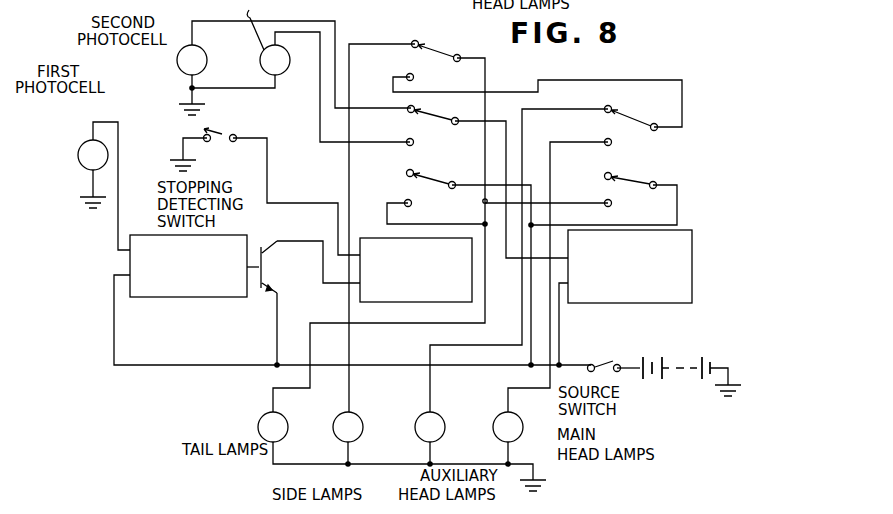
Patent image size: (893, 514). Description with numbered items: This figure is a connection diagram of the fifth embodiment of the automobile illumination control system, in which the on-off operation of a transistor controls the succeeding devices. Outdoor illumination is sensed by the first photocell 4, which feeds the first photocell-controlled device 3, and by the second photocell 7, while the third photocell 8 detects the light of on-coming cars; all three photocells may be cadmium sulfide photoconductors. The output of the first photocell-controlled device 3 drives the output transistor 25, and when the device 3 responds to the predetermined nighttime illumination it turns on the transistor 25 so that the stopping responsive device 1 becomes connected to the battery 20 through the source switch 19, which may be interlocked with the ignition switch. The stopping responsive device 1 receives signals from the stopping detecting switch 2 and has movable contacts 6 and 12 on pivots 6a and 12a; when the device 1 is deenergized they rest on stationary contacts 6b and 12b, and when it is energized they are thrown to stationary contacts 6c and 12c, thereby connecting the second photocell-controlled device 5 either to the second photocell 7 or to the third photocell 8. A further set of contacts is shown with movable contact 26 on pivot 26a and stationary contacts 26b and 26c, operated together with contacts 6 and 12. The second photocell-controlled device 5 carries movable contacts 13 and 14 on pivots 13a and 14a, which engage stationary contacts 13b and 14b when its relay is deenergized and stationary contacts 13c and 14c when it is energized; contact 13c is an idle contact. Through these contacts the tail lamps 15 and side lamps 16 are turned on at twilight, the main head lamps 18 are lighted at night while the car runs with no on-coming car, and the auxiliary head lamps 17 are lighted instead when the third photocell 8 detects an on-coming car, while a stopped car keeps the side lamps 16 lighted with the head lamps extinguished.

The stopping responsive device 1 is at (370, 302).
The stopping detecting switch 2 is at (221, 134).
The first photocell-controlled device 3 is at (143, 298).
The first photocell 4 is at (91, 140).
The second photocell-controlled device 5 is at (643, 303).
The movable contact 6 is at (434, 116).
The pivot of movable contact 6a is at (456, 125).
The stationary contact 6b is at (408, 112).
The stationary contact 6c is at (410, 146).
The second photocell 7 is at (187, 46).
The third photocell 8 is at (280, 78).
The movable contact 12 is at (436, 52).
The pivot of movable contact 12a is at (458, 54).
The stationary contact 12b is at (414, 40).
The stationary contact 12c is at (410, 73).
The movable contact 13 is at (632, 181).
The pivot of movable contact 13a is at (656, 181).
The stationary contact 13b is at (605, 173).
The stationary contact 13c is at (605, 200).
The movable contact 14 is at (630, 119).
The pivot of movable contact 14a is at (655, 131).
The stationary contact 14b is at (606, 106).
The stationary contact 14c is at (606, 139).
The tail lamps 15 is at (258, 427).
The side lamps 16 is at (340, 441).
The auxiliary head lamps 17 is at (423, 441).
The main head lamps 18 is at (523, 432).
The source switch 19 is at (601, 377).
The battery 20 is at (678, 364).
The output transistor 25 is at (263, 267).
The switch 26 is at (430, 179).
The switch contact 26a is at (449, 178).
The switch contact 26b is at (393, 176).
The switch contact 26c is at (405, 201).